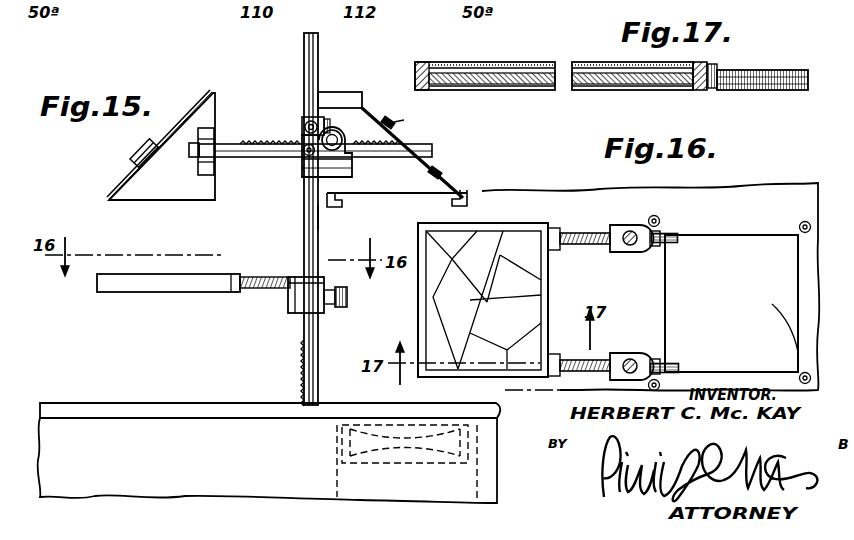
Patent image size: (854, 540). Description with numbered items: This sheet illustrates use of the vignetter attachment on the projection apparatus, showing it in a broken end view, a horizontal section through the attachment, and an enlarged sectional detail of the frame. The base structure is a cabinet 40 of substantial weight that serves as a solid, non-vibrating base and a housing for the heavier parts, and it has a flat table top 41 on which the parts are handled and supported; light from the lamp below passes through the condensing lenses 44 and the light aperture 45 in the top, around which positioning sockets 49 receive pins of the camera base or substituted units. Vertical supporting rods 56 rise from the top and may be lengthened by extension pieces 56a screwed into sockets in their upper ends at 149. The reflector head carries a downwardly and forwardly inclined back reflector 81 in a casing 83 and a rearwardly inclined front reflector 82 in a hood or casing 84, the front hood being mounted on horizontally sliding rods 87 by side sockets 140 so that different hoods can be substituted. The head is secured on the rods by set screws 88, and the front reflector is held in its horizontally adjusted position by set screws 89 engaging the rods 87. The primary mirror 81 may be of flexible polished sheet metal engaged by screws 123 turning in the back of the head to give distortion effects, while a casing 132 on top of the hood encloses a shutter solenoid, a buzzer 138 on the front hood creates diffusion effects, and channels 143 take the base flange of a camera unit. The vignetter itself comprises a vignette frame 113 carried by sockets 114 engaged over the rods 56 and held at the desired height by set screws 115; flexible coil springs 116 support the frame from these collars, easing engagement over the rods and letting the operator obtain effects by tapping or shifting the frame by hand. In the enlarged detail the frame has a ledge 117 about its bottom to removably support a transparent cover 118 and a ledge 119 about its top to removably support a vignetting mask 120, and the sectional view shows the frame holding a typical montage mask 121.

In FIG. 15, the cabinet 40 is at (267, 460).
In FIG. 15, the table top 41 is at (182, 410).
In FIG. 15, the condensing lenses 44 is at (383, 408).
In FIG. 16, the light aperture 45 is at (727, 238).
In FIG. 16, the positioning sockets 49 is at (660, 216).
In FIG. 15, the vertical supporting rods 56 is at (305, 240).
In FIG. 16, the vertical supporting rods 56 is at (630, 251).
In FIG. 15, the extension pieces 56a is at (306, 48).
In FIG. 15, the back reflector 81 is at (368, 122).
In FIG. 15, the front reflector 82 is at (196, 113).
In FIG. 15, the casing 83 is at (397, 185).
In FIG. 15, the casing 84 is at (162, 146).
In FIG. 15, the horizontally sliding rods 87 is at (434, 150).
In FIG. 15, the set screws 88 is at (305, 127).
In FIG. 15, the set screws 89 is at (304, 157).
In FIG. 15, the vignette frame 113 is at (125, 287).
In FIG. 17, the vignette frame 113 is at (420, 70).
In FIG. 16, the vignette frame 113 is at (552, 232).
In FIG. 15, the sockets 114 is at (300, 292).
In FIG. 16, the sockets 114 is at (628, 233).
In FIG. 15, the set screws 115 is at (340, 297).
In FIG. 16, the set screws 115 is at (667, 234).
In FIG. 15, the flexible coil springs 116 is at (272, 272).
In FIG. 17, the flexible coil springs 116 is at (778, 62).
In FIG. 16, the flexible coil springs 116 is at (577, 235).
In FIG. 17, the ledge 117 is at (442, 87).
In FIG. 17, the transparent cover 118 is at (608, 84).
In FIG. 17, the ledge 119 is at (445, 64).
In FIG. 17, the vignetting mask 120 is at (540, 63).
In FIG. 16, the montage mask 121 is at (482, 243).
In FIG. 15, the screws 123 is at (414, 142).
In FIG. 15, the casing 132 is at (346, 88).
In FIG. 15, the buzzer 138 is at (138, 151).
In FIG. 15, the side sockets 140 is at (215, 146).
In FIG. 15, the channels 143 is at (452, 201).
In FIG. 15, the sockets in upper ends of supporting rods 149 is at (304, 218).